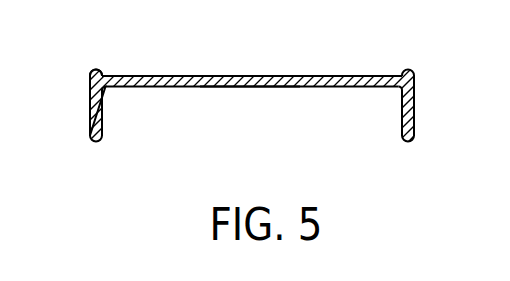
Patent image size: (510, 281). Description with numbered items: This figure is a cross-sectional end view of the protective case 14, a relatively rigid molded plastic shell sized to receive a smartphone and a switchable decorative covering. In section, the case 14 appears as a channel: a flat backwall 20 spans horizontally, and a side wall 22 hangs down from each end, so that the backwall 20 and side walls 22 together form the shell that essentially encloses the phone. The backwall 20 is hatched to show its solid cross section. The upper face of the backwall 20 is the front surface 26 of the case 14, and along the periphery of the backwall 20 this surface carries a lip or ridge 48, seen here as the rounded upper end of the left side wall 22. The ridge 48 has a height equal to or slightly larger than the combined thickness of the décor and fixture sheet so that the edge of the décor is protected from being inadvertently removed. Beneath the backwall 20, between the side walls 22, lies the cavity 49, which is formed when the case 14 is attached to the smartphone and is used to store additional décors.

The protective case 14 is at (255, 99).
The backwall 20 is at (285, 76).
The side walls 22 is at (90, 106).
The front surface 26 is at (167, 73).
The lip or ridge 48 is at (93, 70).
The cavity 49 is at (265, 138).